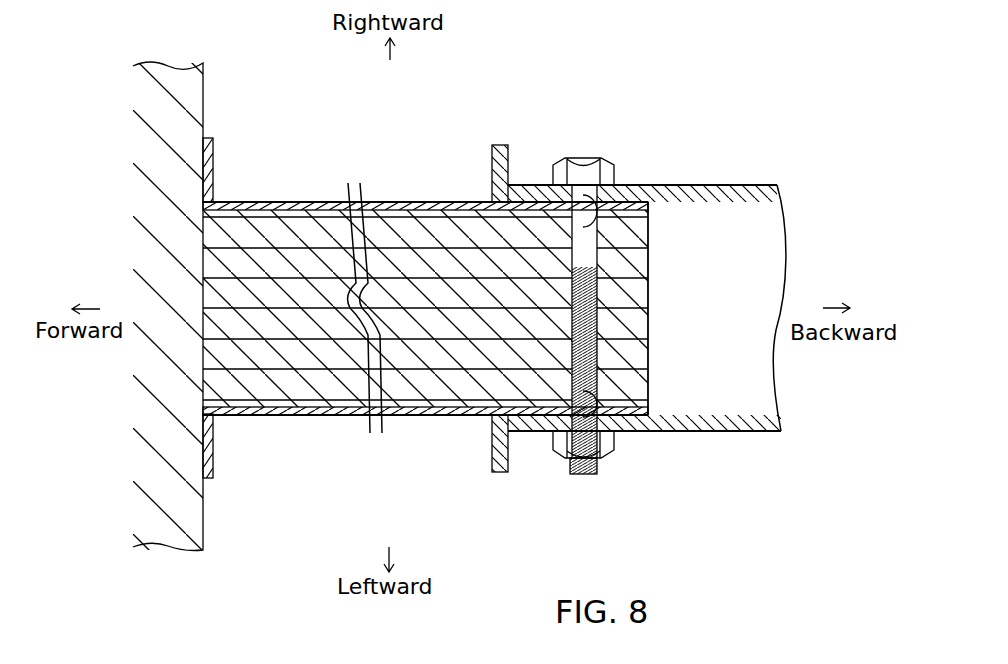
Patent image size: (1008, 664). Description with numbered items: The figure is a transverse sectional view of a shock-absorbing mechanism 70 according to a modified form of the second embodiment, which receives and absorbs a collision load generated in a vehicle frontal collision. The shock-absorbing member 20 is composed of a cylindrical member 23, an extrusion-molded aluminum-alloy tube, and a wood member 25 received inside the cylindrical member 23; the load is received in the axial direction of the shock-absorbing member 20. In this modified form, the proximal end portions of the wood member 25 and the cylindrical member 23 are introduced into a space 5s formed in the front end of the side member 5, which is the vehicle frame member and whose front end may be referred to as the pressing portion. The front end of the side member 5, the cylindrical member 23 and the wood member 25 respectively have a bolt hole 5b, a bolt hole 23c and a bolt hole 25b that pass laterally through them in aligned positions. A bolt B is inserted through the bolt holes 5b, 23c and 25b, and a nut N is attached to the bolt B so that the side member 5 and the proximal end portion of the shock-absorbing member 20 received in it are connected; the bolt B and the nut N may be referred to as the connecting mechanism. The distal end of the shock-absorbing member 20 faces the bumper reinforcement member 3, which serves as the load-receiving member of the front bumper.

The shock-absorbing mechanism 70 is at (471, 85).
The shock-absorbing member 20 is at (305, 186).
The cylindrical member 23 is at (434, 206).
The wood member 25 is at (420, 323).
The bolt hole 25b is at (595, 292).
The side member 5 is at (721, 168).
The bolt hole 5b is at (678, 306).
The bolt hole 23c is at (596, 212).
The space 5s is at (720, 404).
The bolt B is at (586, 172).
The nut N is at (607, 437).
The bumper reinforcement member 3 is at (180, 402).